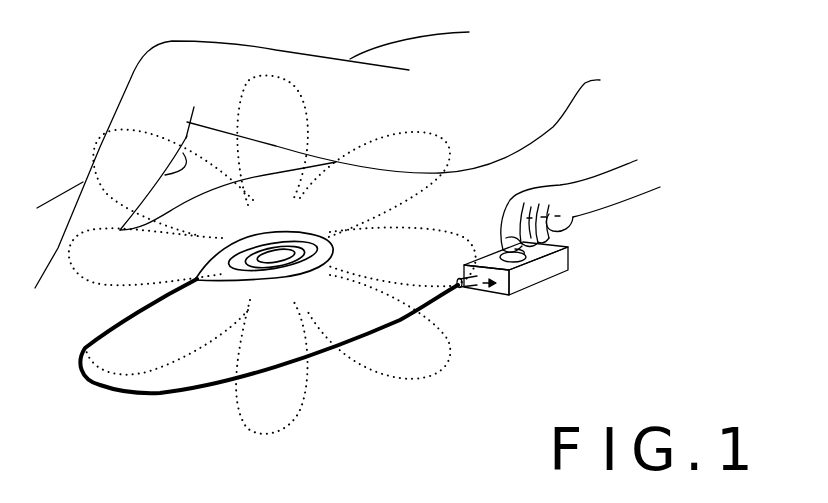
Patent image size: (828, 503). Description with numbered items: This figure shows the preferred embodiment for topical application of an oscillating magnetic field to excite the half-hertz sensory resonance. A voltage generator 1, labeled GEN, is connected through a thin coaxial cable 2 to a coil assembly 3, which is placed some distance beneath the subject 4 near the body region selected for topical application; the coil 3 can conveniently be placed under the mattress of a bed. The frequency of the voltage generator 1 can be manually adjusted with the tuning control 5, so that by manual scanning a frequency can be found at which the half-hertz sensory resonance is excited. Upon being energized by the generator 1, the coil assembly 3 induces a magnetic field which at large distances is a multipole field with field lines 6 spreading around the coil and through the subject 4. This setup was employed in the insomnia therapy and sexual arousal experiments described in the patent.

The voltage generator 1 is at (518, 296).
The coaxial cable 2 is at (167, 397).
The coil assembly 3 is at (238, 278).
The subject 4 is at (556, 132).
The tuning control 5 is at (497, 254).
The field lines 6 is at (373, 372).